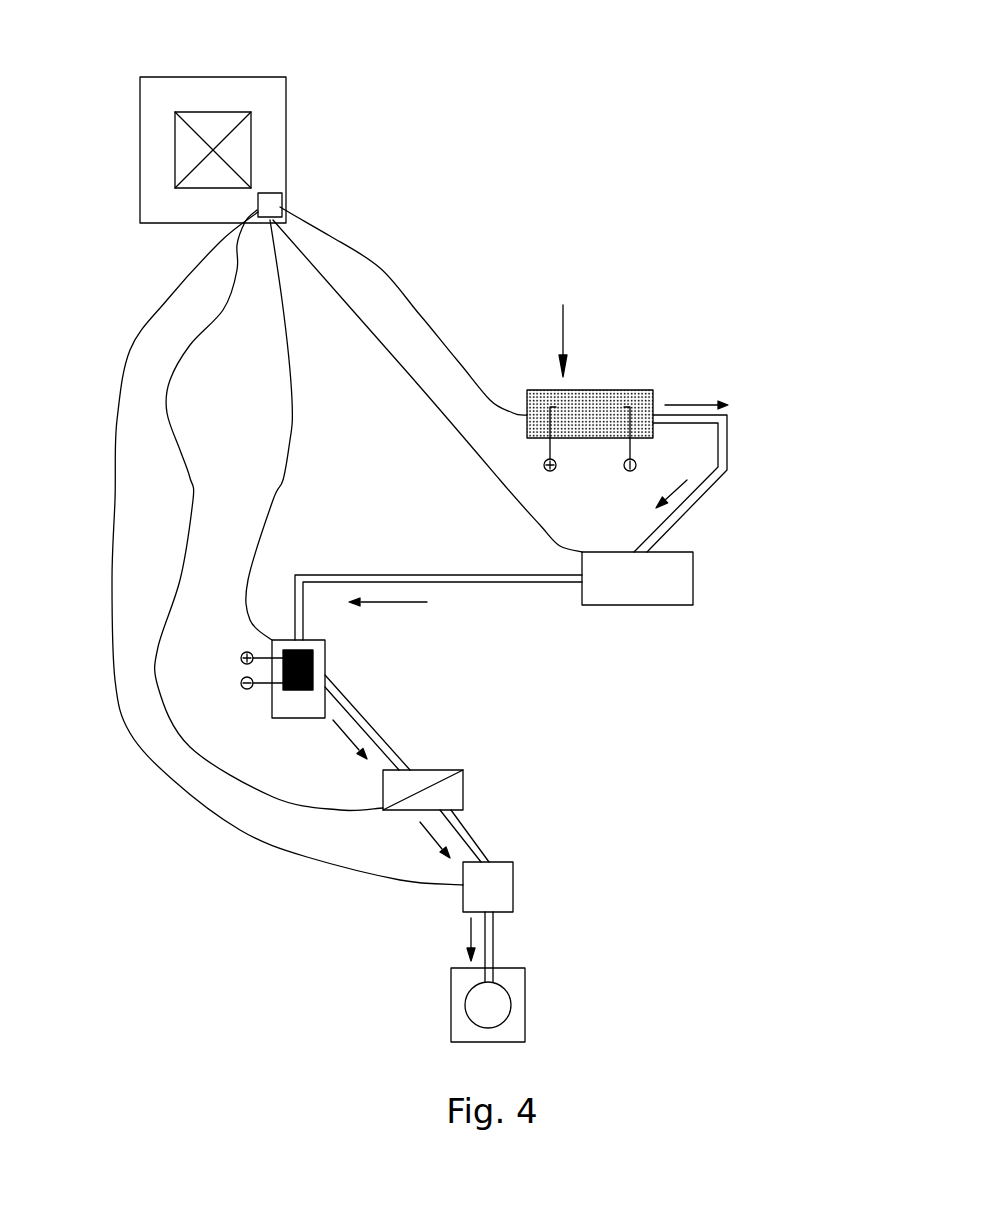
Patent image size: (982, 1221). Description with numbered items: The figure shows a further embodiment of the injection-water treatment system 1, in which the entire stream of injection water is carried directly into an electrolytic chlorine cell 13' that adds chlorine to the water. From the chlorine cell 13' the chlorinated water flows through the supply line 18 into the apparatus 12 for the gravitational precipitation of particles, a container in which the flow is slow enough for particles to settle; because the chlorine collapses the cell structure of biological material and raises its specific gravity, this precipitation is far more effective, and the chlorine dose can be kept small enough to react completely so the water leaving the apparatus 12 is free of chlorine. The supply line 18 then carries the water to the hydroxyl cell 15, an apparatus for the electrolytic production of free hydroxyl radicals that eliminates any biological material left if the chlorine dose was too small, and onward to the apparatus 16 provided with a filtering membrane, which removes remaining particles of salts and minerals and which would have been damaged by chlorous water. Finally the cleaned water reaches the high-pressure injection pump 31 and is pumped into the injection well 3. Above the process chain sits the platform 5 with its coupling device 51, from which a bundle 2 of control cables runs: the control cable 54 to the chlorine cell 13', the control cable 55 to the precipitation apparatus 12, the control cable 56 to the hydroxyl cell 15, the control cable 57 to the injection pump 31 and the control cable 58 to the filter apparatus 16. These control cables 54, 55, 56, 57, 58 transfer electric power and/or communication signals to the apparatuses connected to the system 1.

The system 1 is at (707, 93).
The cable bundle 2 is at (225, 488).
The injection well 3 is at (488, 1003).
The platform 5 is at (285, 77).
The coupling device 51 is at (282, 200).
The control cable 54 is at (420, 305).
The control cable 55 is at (522, 507).
The control cable 56 is at (282, 477).
The control cable 57 is at (118, 712).
The control cable 58 is at (190, 480).
The chlorine cell 13' is at (591, 388).
The apparatus for the gravitational precipitation of particles 12 is at (695, 552).
The supply line 18 is at (727, 472).
The hydroxyl cell 15 is at (272, 720).
The apparatus provided with a filtering membrane 16 is at (463, 770).
The high-pressure injection pump 31 is at (513, 887).